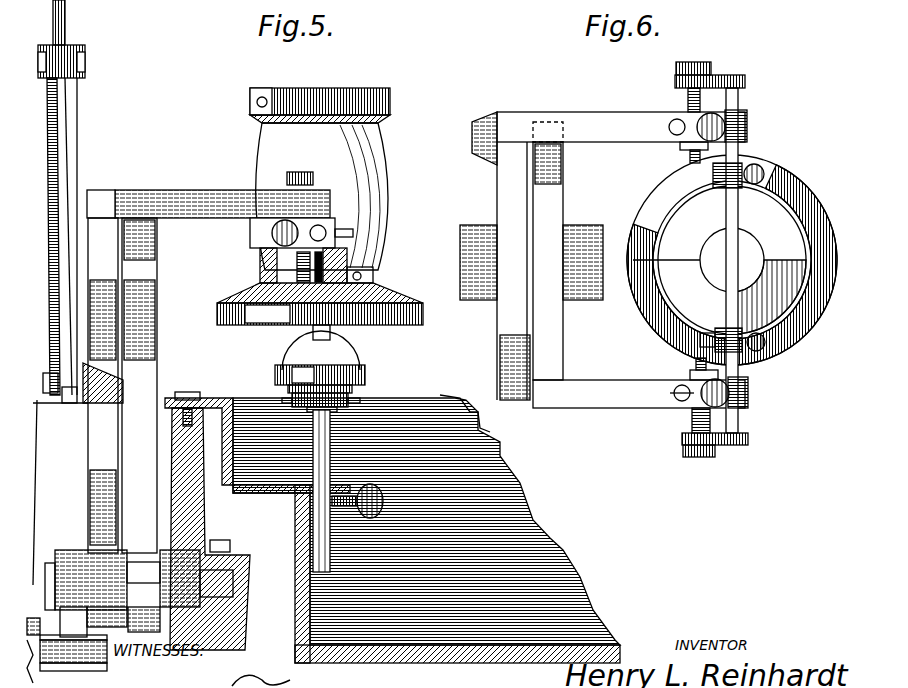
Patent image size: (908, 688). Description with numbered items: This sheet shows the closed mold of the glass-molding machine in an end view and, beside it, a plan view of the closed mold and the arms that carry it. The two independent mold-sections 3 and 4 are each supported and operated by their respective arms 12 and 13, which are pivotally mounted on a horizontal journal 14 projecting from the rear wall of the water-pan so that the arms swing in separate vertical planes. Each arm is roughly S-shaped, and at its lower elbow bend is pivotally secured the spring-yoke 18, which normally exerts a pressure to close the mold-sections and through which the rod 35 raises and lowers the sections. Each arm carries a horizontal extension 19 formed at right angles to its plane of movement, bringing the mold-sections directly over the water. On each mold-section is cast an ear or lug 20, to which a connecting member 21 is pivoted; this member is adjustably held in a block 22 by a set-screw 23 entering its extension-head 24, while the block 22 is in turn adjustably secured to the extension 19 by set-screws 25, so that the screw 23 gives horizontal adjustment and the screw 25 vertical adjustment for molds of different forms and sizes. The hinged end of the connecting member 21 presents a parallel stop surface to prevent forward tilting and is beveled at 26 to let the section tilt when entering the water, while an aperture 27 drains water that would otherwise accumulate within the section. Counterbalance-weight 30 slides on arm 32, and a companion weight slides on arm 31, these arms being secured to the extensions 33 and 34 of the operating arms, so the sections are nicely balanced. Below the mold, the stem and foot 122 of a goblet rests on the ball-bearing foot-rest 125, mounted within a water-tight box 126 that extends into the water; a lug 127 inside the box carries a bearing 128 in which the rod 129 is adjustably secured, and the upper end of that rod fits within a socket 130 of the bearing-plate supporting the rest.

In FIG. 6, the mold-section 3 is at (732, 260).
In FIG. 5, the mold-section 4 is at (358, 82).
In FIG. 6, the mold-section 4 is at (719, 281).
In FIG. 5, the mold-operating arm 12 is at (96, 502).
In FIG. 6, the mold-operating arm 12 is at (502, 320).
In FIG. 5, the mold-operating arm 13 is at (139, 385).
In FIG. 6, the mold-operating arm 13 is at (549, 251).
In FIG. 5, the journal 14 is at (139, 593).
In FIG. 6, the journal 14 is at (475, 300).
In FIG. 5, the spring-yoke 18 is at (78, 152).
In FIG. 5, the horizontal extension 19 is at (205, 220).
In FIG. 6, the horizontal extension 19 is at (604, 135).
In FIG. 6, the ear or lug 20 is at (712, 340).
In FIG. 6, the connecting member 21 is at (748, 160).
In FIG. 5, the block 22 is at (335, 222).
In FIG. 6, the block 22 is at (748, 128).
In FIG. 5, the set-screw 23 is at (272, 236).
In FIG. 6, the set-screw 23 is at (697, 62).
In FIG. 5, the extension-head 24 is at (260, 260).
In FIG. 6, the extension-head 24 is at (745, 82).
In FIG. 5, the set-screw 25 is at (300, 170).
In FIG. 6, the set-screw 25 is at (705, 398).
In FIG. 6, the bevel 26 is at (730, 188).
In FIG. 5, the aperture 27 is at (382, 255).
In FIG. 5, the counterbalance-weight 30 is at (45, 672).
In FIG. 5, the arm 31 is at (23, 541).
In FIG. 5, the arm 32 is at (88, 664).
In FIG. 5, the extension 33 is at (144, 619).
In FIG. 5, the extension 34 is at (108, 650).
In FIG. 5, the rod 35 is at (66, 7).
In FIG. 5, the stem and foot 122 is at (321, 347).
In FIG. 5, the foot-rest 125 is at (366, 373).
In FIG. 5, the water-tight box 126 is at (392, 521).
In FIG. 5, the lug or support 127 is at (333, 490).
In FIG. 5, the bearing 128 is at (332, 522).
In FIG. 5, the rod 129 is at (318, 462).
In FIG. 5, the socket 130 is at (340, 410).